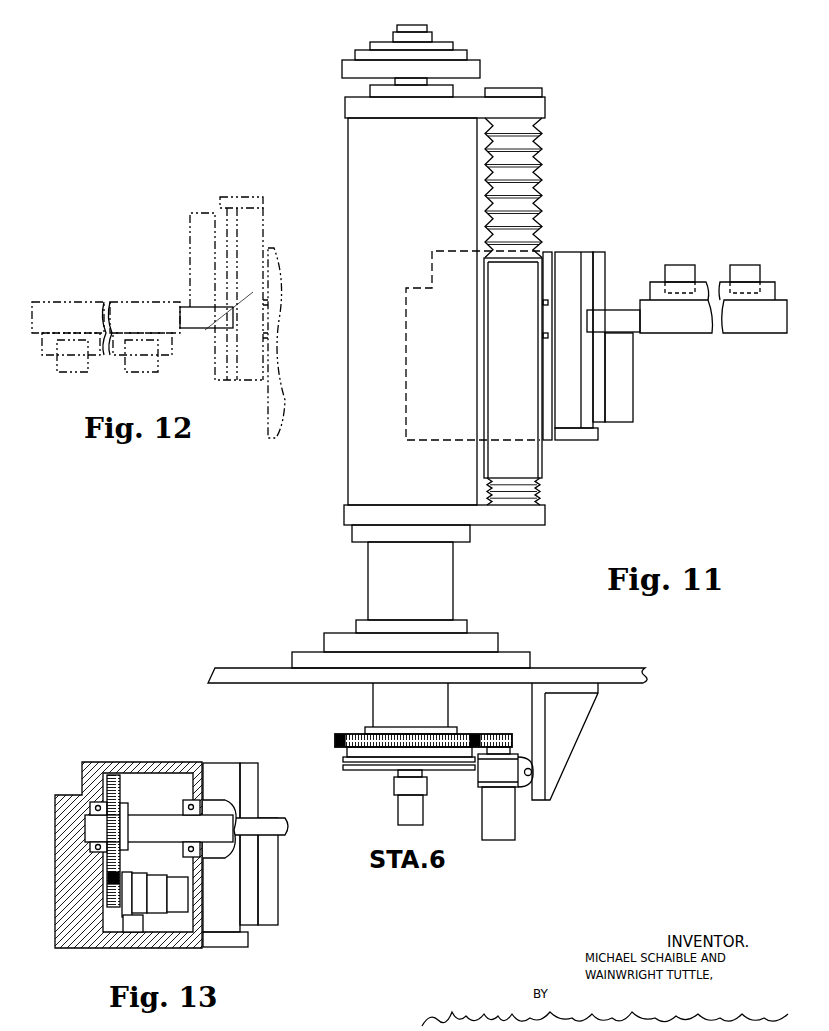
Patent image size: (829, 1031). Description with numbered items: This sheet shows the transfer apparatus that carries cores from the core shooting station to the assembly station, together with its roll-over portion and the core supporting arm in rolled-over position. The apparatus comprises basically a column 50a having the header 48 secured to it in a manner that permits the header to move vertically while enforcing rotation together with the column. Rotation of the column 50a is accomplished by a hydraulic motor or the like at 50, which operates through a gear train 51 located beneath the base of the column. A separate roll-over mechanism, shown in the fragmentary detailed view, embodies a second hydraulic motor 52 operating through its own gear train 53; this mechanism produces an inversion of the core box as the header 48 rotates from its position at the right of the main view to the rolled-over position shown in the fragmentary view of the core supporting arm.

In FIG. 11, the header 48 is at (688, 327).
In FIG. 11, the hydraulic motor 50 is at (500, 833).
In FIG. 11, the column 50a is at (446, 594).
In FIG. 11, the gear train 51 is at (480, 731).
In FIG. 13, the hydraulic motor 52 is at (155, 880).
In FIG. 13, the gear train 53 is at (107, 868).